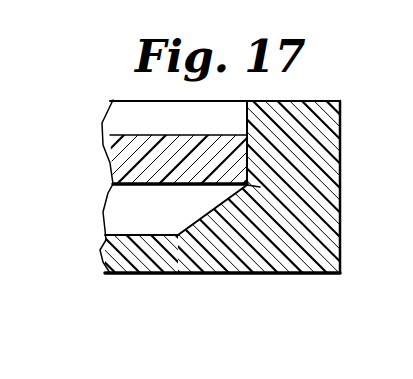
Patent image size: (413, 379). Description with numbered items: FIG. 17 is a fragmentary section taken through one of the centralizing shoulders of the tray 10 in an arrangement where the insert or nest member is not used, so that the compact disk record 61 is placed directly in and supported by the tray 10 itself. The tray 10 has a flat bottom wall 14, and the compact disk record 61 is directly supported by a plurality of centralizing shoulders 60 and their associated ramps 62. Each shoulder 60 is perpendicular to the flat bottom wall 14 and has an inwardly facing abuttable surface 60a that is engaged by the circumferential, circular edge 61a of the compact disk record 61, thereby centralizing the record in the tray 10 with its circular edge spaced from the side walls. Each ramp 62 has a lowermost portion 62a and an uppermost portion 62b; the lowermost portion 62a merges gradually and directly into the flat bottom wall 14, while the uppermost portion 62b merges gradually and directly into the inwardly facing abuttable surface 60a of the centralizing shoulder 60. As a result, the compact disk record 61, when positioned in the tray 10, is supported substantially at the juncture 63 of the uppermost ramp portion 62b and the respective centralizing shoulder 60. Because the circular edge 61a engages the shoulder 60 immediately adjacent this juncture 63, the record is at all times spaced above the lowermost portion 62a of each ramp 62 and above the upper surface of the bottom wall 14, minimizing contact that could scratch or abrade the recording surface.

The tray 10 is at (340, 288).
The bottom wall 14 is at (128, 252).
The centralizing shoulder 60 is at (297, 128).
The inwardly facing abuttable surface 60a is at (244, 118).
The compact disk record 61 is at (128, 160).
The circular edge 61a is at (247, 166).
The ramp 62 is at (186, 202).
The lowermost portion 62a is at (180, 226).
The uppermost portion 62b is at (218, 227).
The juncture 63 is at (250, 188).